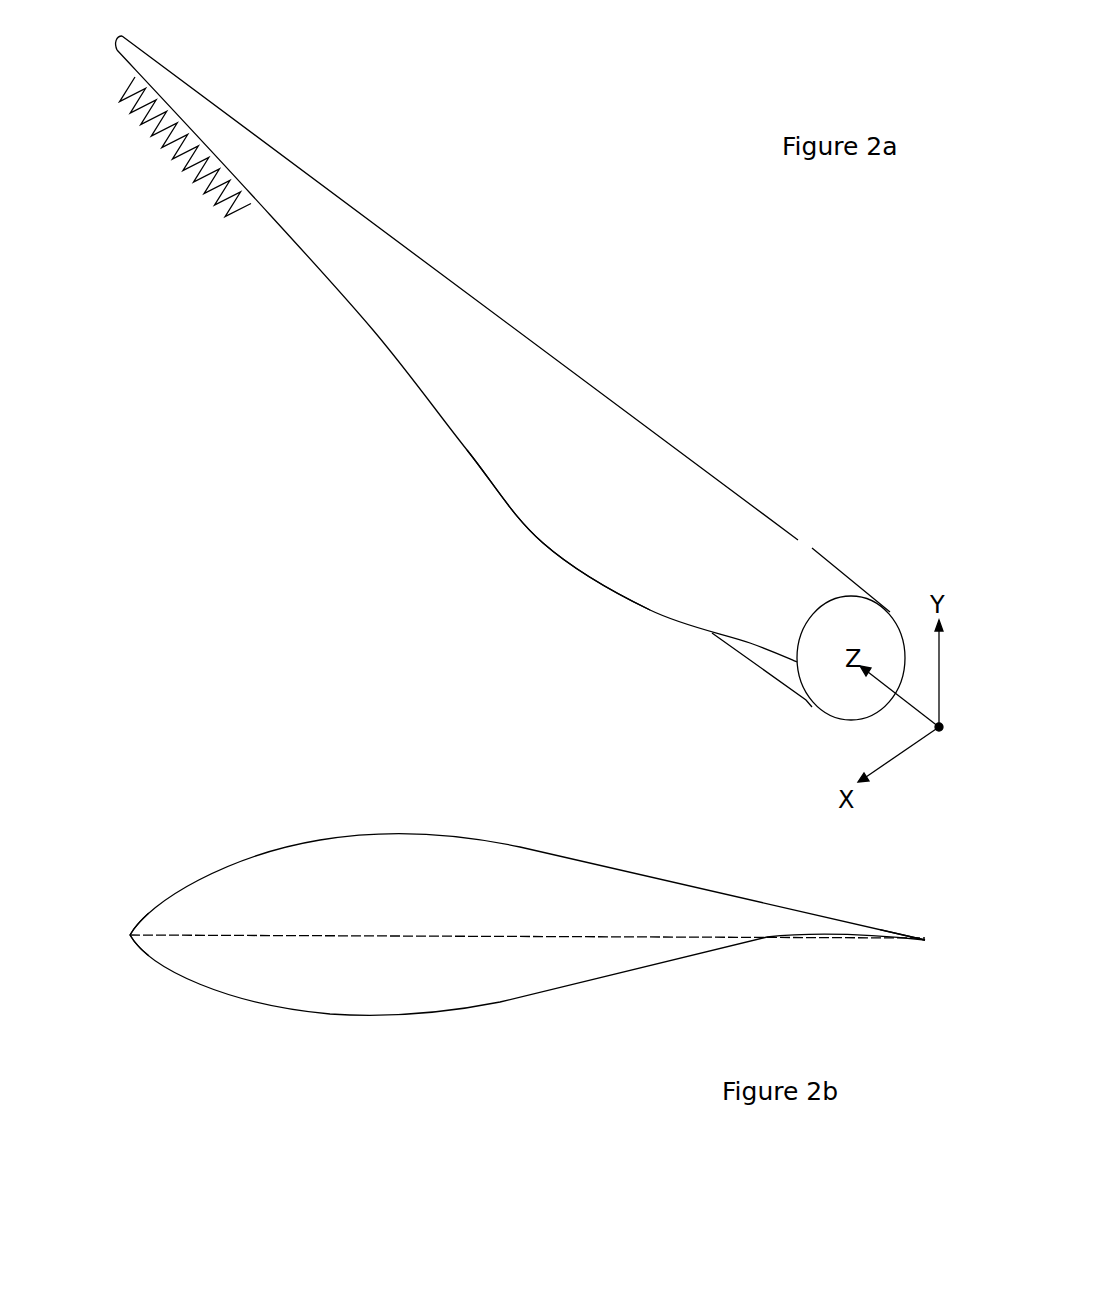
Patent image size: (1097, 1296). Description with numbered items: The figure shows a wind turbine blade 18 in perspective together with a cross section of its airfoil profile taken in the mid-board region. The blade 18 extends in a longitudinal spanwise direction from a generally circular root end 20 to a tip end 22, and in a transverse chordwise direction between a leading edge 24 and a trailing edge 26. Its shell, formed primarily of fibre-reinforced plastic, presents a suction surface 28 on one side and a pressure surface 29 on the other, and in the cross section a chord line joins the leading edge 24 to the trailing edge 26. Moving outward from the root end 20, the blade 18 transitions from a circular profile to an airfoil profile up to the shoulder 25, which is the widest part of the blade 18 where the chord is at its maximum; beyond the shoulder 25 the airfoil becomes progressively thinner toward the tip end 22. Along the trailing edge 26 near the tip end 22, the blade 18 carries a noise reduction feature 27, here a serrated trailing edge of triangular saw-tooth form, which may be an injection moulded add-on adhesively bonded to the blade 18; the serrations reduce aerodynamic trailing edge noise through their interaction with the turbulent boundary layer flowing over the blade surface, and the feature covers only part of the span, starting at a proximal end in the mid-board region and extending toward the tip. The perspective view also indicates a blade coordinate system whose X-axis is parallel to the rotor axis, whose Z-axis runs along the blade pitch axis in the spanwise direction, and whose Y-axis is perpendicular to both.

In FIG. 2A, the blade 18 is at (452, 205).
In FIG. 2A, the root end 20 is at (888, 613).
In FIG. 2A, the tip end 22 is at (116, 44).
In FIG. 2A, the leading edge 24 is at (515, 333).
In FIG. 2B, the leading edge 24 is at (128, 938).
In FIG. 2A, the shoulder 25 is at (542, 550).
In FIG. 2A, the trailing edge 26 is at (405, 372).
In FIG. 2B, the trailing edge 26 is at (925, 942).
In FIG. 2A, the noise reduction feature 27 is at (168, 169).
In FIG. 2A, the suction surface 28 is at (698, 532).
In FIG. 2B, the suction surface 28 is at (298, 843).
In FIG. 2A, the pressure surface 29 is at (743, 655).
In FIG. 2B, the pressure surface 29 is at (542, 993).